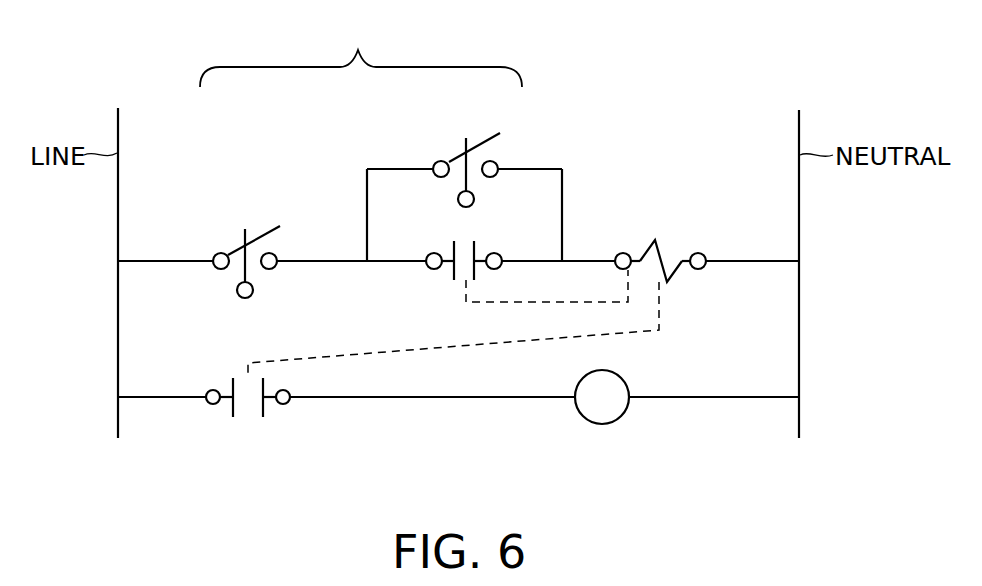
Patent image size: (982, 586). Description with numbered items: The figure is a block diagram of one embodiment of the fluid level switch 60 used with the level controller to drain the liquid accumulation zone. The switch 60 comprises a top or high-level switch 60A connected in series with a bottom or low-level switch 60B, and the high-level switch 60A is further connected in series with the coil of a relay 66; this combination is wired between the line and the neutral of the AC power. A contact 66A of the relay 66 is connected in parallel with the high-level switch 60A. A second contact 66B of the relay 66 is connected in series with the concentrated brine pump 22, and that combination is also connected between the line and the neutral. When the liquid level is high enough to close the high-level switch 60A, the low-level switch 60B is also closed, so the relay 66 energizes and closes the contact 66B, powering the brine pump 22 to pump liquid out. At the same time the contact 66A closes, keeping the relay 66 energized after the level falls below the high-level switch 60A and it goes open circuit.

The liquid level switch 60 is at (361, 55).
The high-level switch 60A is at (485, 132).
The low-level switch 60B is at (237, 248).
The relay 66 is at (660, 250).
The contact of relay 66A is at (455, 272).
The contact of relay 66B is at (245, 415).
The concentrated brine pump 22 is at (625, 378).